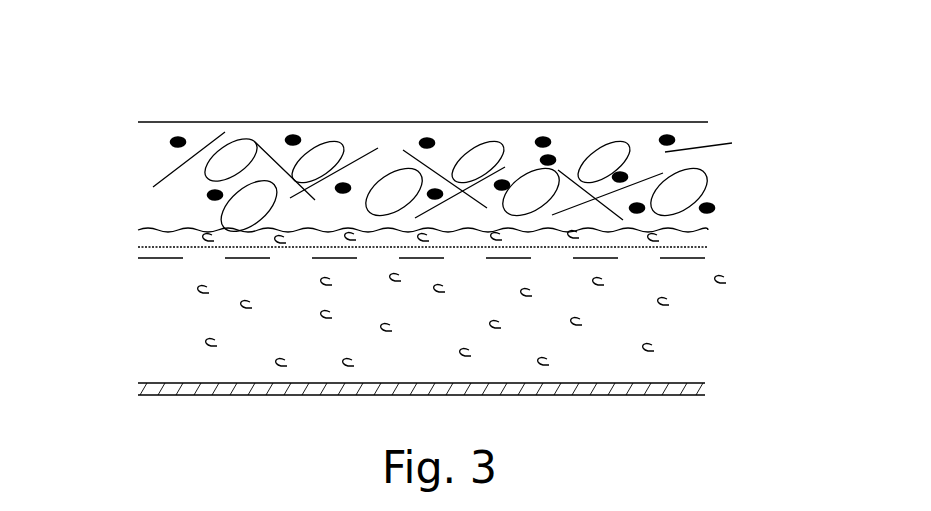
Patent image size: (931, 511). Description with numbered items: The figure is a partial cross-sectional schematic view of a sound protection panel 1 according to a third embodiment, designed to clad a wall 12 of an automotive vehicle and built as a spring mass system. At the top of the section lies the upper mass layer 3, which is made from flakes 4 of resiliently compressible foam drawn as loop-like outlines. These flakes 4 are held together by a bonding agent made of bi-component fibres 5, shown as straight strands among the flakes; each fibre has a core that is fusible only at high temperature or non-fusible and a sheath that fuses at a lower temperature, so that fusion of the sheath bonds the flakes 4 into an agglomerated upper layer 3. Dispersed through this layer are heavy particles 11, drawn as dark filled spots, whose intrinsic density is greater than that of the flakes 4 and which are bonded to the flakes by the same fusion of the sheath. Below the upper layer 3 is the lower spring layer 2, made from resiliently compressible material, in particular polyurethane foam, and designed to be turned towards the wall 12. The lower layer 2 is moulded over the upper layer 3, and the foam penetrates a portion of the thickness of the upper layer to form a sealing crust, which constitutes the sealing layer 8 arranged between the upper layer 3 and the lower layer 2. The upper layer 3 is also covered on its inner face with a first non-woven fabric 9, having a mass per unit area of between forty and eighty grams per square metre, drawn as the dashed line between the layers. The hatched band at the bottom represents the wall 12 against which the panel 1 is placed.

The sound protection panel 1 is at (384, 110).
The lower spring layer 2 is at (738, 337).
The upper mass layer 3 is at (733, 172).
The flakes 4 is at (607, 147).
The bi-component fibres 5 is at (716, 137).
The sealing layer 8 is at (133, 243).
The first non-woven fabric 9 is at (717, 257).
The heavy particles 11 is at (296, 128).
The wall 12 is at (726, 405).